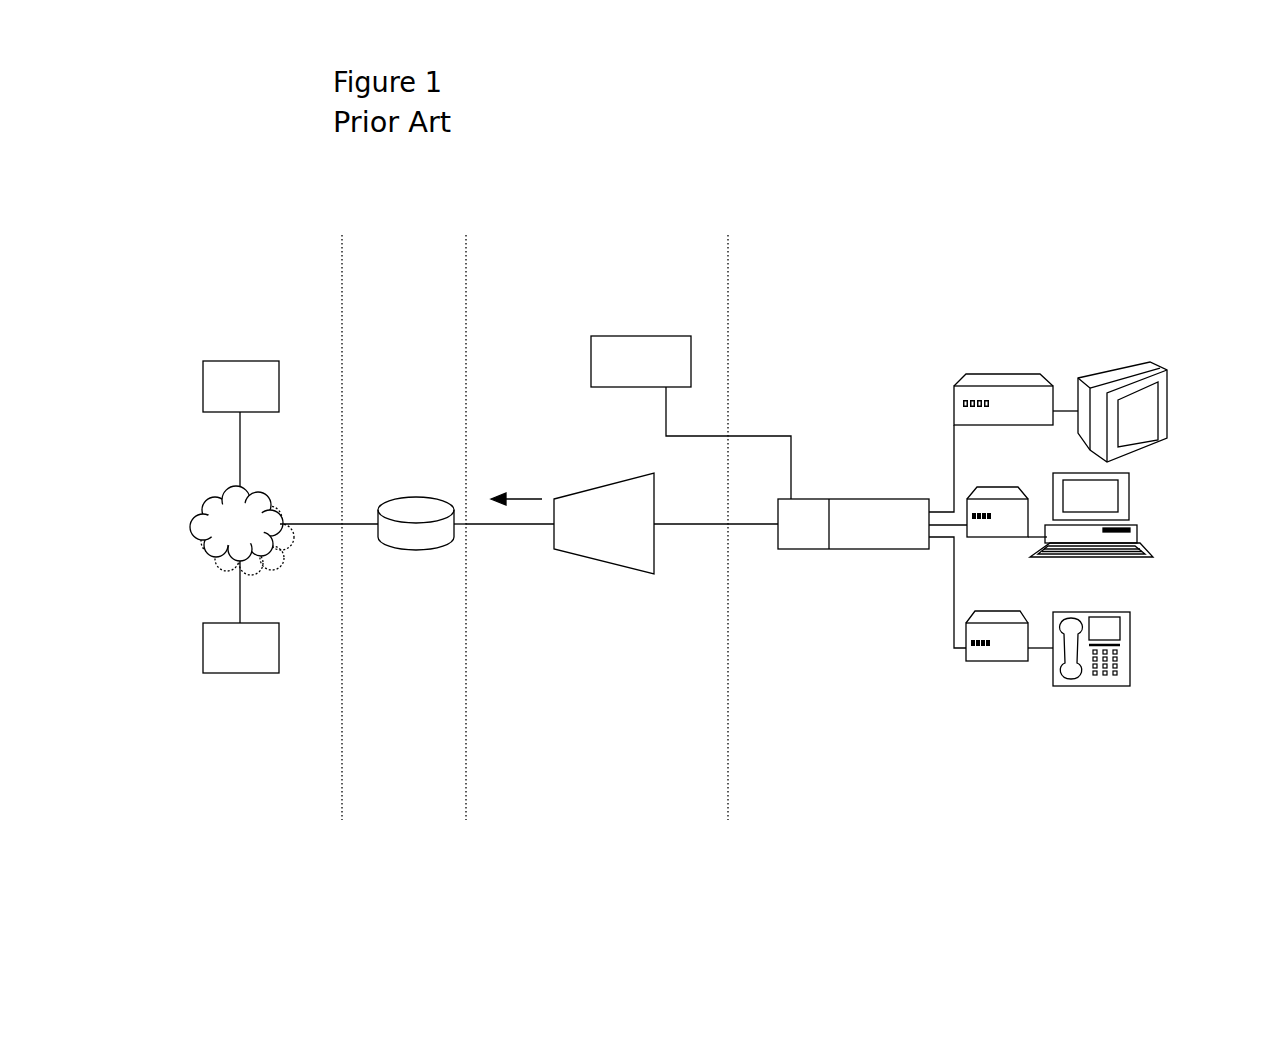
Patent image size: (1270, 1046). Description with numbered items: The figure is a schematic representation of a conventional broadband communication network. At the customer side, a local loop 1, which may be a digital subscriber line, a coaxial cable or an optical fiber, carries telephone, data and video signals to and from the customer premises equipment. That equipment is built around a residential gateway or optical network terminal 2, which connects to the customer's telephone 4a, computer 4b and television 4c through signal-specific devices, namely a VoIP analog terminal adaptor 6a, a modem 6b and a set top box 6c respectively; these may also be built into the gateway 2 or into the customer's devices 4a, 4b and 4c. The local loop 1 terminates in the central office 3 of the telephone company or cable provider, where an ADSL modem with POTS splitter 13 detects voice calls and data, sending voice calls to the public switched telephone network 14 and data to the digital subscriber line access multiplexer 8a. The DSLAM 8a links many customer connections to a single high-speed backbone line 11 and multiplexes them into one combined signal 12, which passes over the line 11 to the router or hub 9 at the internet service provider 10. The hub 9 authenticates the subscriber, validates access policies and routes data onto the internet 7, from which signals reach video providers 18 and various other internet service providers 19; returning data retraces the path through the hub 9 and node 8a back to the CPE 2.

The local loop 1 is at (752, 524).
The residential gateway or optical network terminal 2 is at (853, 492).
The central office 3 is at (505, 284).
The telephone 4a is at (1117, 687).
The computer 4b is at (1140, 538).
The television 4c is at (1130, 373).
The VoIP analog terminal adaptor 6a is at (1003, 648).
The modem 6b is at (990, 500).
The set top box 6c is at (993, 374).
The internet 7 is at (230, 544).
The digital subscriber line access multiplexer 8a is at (617, 560).
The router or hub 9 is at (400, 550).
The internet service provider 10 is at (394, 346).
The high-speed backbone line 11 is at (515, 524).
The combined signal 12 is at (522, 499).
The ADSL modem with POTS splitter 13 is at (792, 535).
The public switched telephone network 14 is at (652, 335).
The video providers 18 is at (228, 396).
The other internet service providers 19 is at (228, 659).